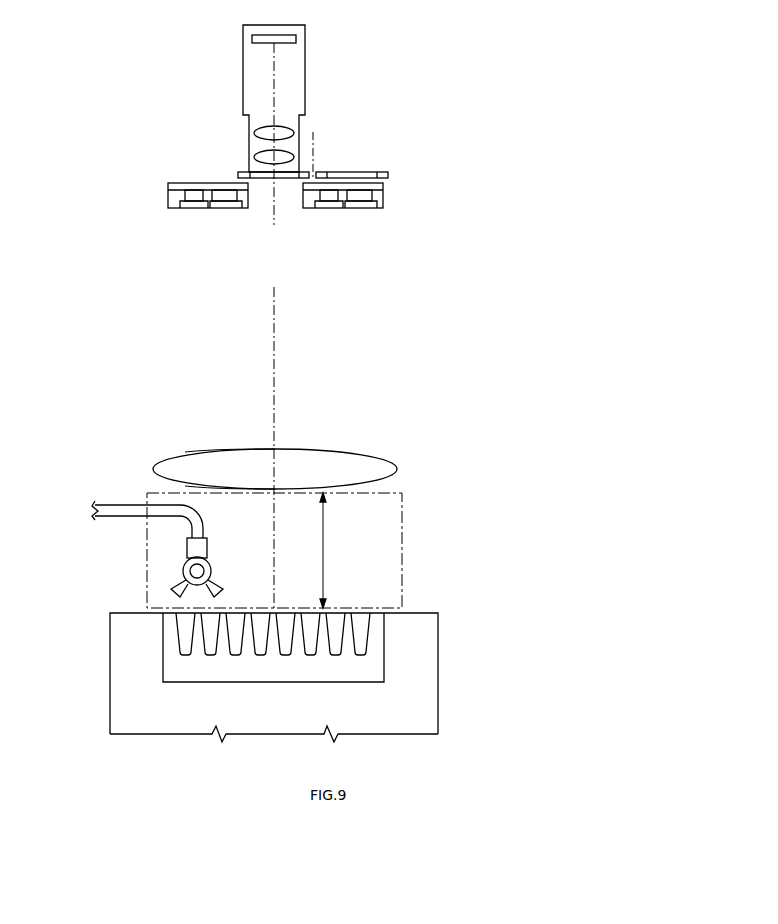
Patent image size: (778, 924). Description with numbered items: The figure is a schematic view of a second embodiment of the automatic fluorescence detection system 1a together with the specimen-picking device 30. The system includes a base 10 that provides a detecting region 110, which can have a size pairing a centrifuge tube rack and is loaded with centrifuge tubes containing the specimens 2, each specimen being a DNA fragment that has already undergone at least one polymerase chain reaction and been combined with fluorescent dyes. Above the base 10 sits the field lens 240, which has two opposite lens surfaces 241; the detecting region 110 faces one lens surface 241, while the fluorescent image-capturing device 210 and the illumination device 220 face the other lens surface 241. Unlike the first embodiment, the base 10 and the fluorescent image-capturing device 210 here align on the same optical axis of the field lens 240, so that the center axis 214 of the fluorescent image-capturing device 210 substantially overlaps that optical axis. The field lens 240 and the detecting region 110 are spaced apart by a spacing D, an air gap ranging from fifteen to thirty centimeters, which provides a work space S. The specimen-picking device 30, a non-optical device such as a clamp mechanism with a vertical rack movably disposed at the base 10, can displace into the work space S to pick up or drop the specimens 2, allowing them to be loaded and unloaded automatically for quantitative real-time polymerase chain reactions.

The fluorescent image-capturing device 210 is at (305, 90).
The center axis 214 is at (277, 407).
The illumination device 220 is at (395, 197).
The automatic fluorescence detection system 1a is at (512, 440).
The field lens 240 is at (152, 469).
The lens surfaces 241 is at (185, 453).
The work space S is at (404, 510).
The spacing D is at (317, 550).
The specimen-picking device 30 is at (187, 548).
The base 10 is at (425, 684).
The specimen 2 is at (360, 625).
The detecting region 110 is at (349, 612).